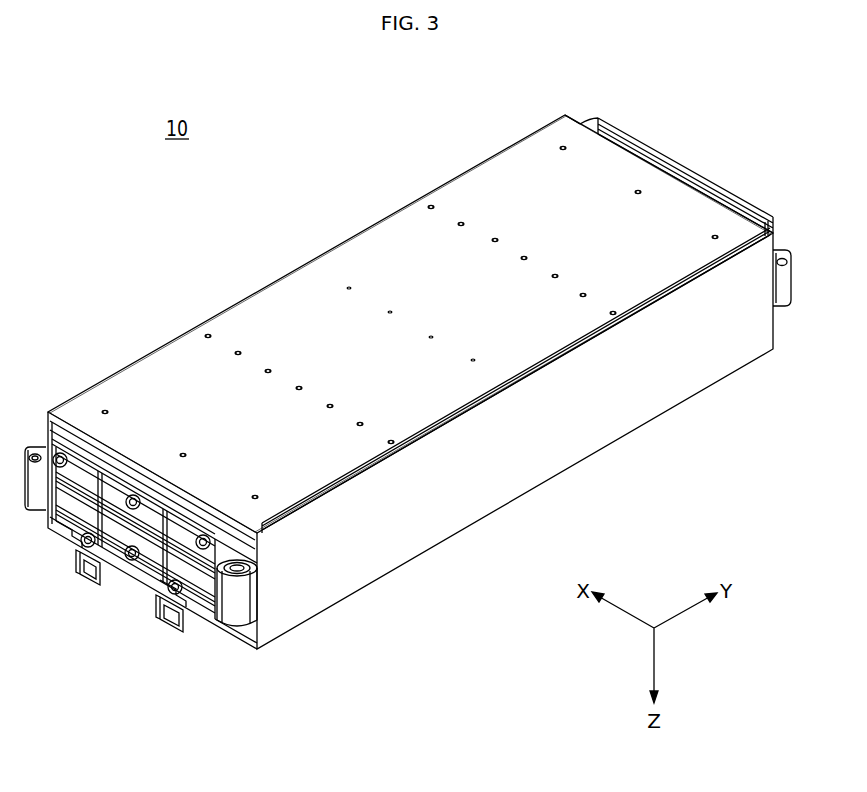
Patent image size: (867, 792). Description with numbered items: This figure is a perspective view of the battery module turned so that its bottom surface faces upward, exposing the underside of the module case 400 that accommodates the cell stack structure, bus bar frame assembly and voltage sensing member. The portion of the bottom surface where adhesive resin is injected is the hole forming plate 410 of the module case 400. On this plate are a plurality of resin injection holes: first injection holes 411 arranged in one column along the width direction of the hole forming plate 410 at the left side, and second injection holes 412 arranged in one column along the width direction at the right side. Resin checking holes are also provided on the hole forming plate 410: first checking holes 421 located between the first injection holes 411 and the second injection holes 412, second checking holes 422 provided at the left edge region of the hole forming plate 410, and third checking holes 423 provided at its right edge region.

The module case 400 is at (497, 507).
The hole forming plate 410 is at (520, 172).
The first injection holes 411 is at (237, 347).
The second injection holes 412 is at (460, 217).
The first checking holes 421 is at (348, 283).
The second checking holes 422 is at (104, 406).
The third checking holes 423 is at (562, 141).